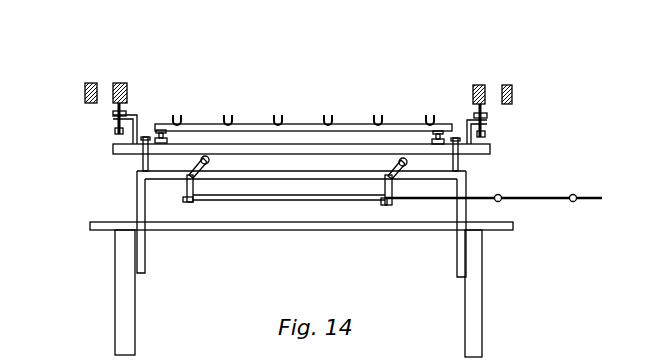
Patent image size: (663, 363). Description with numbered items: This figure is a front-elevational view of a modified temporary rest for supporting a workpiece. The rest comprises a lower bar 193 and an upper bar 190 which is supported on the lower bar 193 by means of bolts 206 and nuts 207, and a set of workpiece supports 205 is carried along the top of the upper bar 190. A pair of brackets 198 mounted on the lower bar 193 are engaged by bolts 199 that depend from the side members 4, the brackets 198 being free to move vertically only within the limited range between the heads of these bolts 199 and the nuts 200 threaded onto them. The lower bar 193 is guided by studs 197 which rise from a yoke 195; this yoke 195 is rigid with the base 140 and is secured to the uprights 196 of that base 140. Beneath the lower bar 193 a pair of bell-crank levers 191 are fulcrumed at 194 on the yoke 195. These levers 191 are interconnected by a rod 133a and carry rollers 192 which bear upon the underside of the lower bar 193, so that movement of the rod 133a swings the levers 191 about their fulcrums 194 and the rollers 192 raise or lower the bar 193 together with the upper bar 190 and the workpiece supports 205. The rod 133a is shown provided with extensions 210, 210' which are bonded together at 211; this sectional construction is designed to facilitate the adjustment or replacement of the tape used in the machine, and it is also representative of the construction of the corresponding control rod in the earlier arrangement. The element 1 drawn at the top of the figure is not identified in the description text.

The substrate 1 is at (88, 82).
The side members 4 is at (116, 82).
The rod 133a is at (330, 198).
The base 140 is at (472, 243).
The upper bar 190 is at (246, 126).
The bell-crank levers 191 is at (196, 178).
The rollers 192 is at (208, 155).
The lower bar 193 is at (300, 145).
The fulcrum 194 is at (194, 203).
The yoke 195 is at (342, 172).
The uprights 196 is at (130, 312).
The studs 197 is at (141, 163).
The brackets 198 is at (136, 133).
The bolts 199 is at (116, 130).
The nuts 200 is at (115, 113).
The workpiece supports 205 is at (175, 113).
The bolts 206 is at (140, 168).
The nuts 207 is at (163, 144).
The extension 210 is at (479, 223).
The extension 210' is at (594, 225).
The bond 211 is at (573, 203).